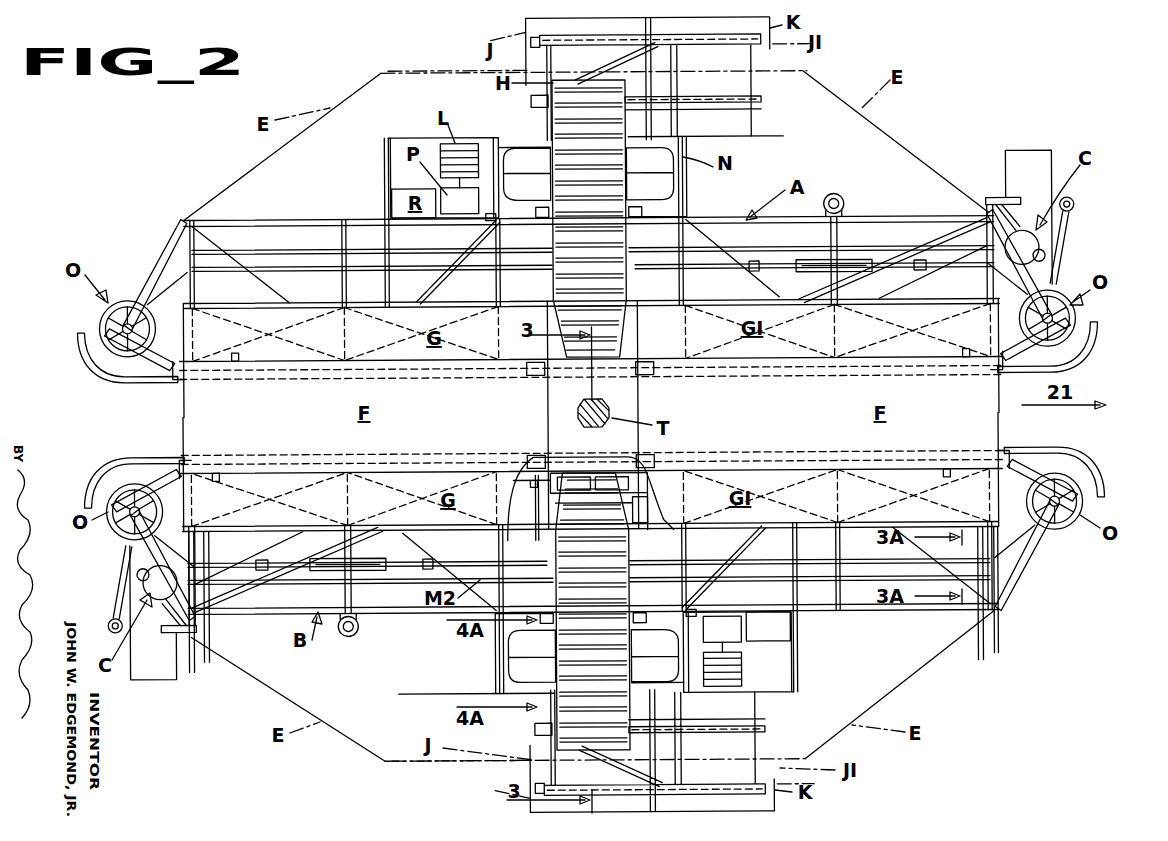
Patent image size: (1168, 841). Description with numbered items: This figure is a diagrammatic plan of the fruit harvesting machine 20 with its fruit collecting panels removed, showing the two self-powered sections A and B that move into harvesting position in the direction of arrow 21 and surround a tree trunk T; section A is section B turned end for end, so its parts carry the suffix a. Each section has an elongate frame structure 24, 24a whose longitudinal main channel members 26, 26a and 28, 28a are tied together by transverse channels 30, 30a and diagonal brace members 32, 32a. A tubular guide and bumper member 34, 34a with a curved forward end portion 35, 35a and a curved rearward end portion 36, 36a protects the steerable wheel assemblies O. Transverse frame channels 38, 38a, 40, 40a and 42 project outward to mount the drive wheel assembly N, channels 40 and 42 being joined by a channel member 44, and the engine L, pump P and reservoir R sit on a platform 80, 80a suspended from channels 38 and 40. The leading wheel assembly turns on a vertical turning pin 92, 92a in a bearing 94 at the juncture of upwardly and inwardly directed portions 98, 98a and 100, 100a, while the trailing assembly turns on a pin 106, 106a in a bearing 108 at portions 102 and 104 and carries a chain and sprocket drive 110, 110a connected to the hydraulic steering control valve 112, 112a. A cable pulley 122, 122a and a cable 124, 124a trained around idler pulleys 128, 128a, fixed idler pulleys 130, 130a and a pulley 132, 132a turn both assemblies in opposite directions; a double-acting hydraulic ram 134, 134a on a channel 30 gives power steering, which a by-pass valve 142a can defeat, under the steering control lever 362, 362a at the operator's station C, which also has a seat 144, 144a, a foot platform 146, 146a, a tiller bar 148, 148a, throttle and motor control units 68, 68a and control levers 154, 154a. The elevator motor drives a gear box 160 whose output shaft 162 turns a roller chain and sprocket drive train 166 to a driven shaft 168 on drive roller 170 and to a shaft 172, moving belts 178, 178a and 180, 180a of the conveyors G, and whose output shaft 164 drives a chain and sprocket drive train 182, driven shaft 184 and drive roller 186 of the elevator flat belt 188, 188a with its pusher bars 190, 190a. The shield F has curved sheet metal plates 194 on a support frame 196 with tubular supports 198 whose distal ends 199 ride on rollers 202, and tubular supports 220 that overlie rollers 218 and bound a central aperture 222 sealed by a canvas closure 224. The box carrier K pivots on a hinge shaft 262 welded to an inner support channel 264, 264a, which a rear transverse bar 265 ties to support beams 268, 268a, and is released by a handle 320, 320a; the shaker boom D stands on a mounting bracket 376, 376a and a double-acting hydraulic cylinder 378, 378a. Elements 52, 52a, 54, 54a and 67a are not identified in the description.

The fruit harvesting machine 20 is at (932, 100).
The arrow 21 is at (1072, 400).
The frame structure 24 is at (270, 630).
The frame structure 24a is at (250, 205).
The longitudinal main channel member 26 is at (540, 468).
The longitudinal main channel member 26a is at (195, 370).
The longitudinal main channel member 28 is at (392, 620).
The longitudinal main channel member 28a is at (873, 218).
The transverse channels 30 is at (345, 541).
The transverse channels 30a is at (340, 238).
The diagonal brace members 32 is at (272, 545).
The diagonal brace members 32a is at (310, 330).
The tubular guide and bumper member 34 is at (270, 452).
The tubular guide and bumper member 34a is at (180, 378).
The curved forward end portion 35 is at (1100, 471).
The curved forward end portion 35a is at (1098, 340).
The curved rearward end portion 36 is at (95, 462).
The curved rearward end portion 36a is at (80, 337).
The transverse frame channel 38 is at (800, 665).
The transverse frame channel 38a is at (385, 152).
The transverse frame channel 40 is at (686, 545).
The transverse frame channel 40a is at (497, 280).
The transverse frame channel 42 is at (490, 483).
The channel member 44 is at (505, 682).
The conveyor support 52 is at (695, 601).
The conveyor support 52a is at (553, 226).
The chute 54 is at (520, 660).
The chute 54a is at (515, 178).
The chute lip 67a is at (685, 206).
The throttle and motor control unit 68 is at (158, 630).
The throttle and motor control unit 68a is at (998, 196).
The platform 80 is at (785, 683).
The platform 80a is at (392, 140).
The vertical turning pin 92 is at (1080, 492).
The vertical turning pin 92a is at (112, 318).
The bearing 94 is at (1062, 530).
The upwardly and inwardly directed portion 98 is at (1040, 467).
The upwardly and inwardly directed portion 98a is at (172, 375).
The upwardly and inwardly directed portion 100 is at (1040, 560).
The upwardly and inwardly directed portion 100a is at (168, 234).
The upwardly and inwardly directed portion 102 is at (155, 462).
The upwardly and inwardly directed portion 104 is at (126, 535).
The vertical turning pin 106 is at (112, 505).
The vertical turning pin 106a is at (1085, 312).
The bearing 108 is at (100, 480).
The chain and sprocket drive 110 is at (205, 513).
The chain and sprocket drive 110a is at (995, 285).
The hydraulic steering control valve 112 is at (205, 618).
The hydraulic steering control valve 112a is at (960, 228).
The cable pulley 122 is at (1090, 505).
The cable pulley 122a is at (100, 348).
The cable 124 is at (790, 545).
The cable 124a is at (298, 255).
The idler pulleys 128 is at (1000, 580).
The idler pulleys 128a is at (193, 267).
The fixed idler pulleys 130 is at (210, 560).
The fixed idler pulleys 130a is at (993, 268).
The pulley 132 is at (120, 480).
The pulley 132a is at (1097, 325).
The double-acting hydraulic ram 134 is at (330, 566).
The double-acting hydraulic ram 134a is at (823, 268).
The by-pass valve 142a is at (684, 283).
The seat 144 is at (140, 571).
The seat 144a is at (1045, 248).
The foot platform 146 is at (160, 675).
The foot platform 146a is at (1043, 157).
The tiller bar 148 is at (130, 578).
The tiller bar 148a is at (1080, 217).
The control lever 154 is at (210, 588).
The control lever 154a is at (995, 210).
The gear box 160 is at (540, 560).
The output shaft 162 is at (480, 606).
The output shaft 164 is at (535, 543).
The roller chain and sprocket drive train 166 is at (568, 590).
The driven shaft 168 is at (655, 560).
The drive roller 170 is at (648, 508).
The shaft 172 is at (535, 515).
The belt 178 is at (922, 462).
The belt 178a is at (812, 385).
The belt 180 is at (398, 470).
The belt 180a is at (307, 387).
The chain and sprocket drive train 182 is at (530, 497).
The driven shaft 184 is at (545, 475).
The drive roller 186 is at (580, 470).
The flat belt 188 is at (567, 728).
The flat belt 188a is at (577, 82).
The transverse pusher bars 190 is at (603, 703).
The transverse pusher bars 190a is at (556, 280).
The curved sheet metal plates 194 is at (595, 408).
The support frame 196 is at (645, 352).
The tubular support 198 is at (210, 505).
The distal end 199 is at (222, 355).
The roller 202 is at (235, 353).
The rollers 218 is at (530, 380).
The tubular supports 220 is at (500, 350).
The central aperture 222 is at (642, 402).
The canvas closure 224 is at (555, 398).
The hinge shaft 262 is at (690, 750).
The inner support channel 264 is at (780, 708).
The inner support channel 264a is at (785, 112).
The rear transverse bar 265 is at (535, 768).
The support beams 268 is at (775, 737).
The support beams 268a is at (790, 60).
The handle 320 is at (483, 693).
The handle 320a is at (487, 140).
The control lever 362 is at (205, 635).
The control lever 362a is at (994, 188).
The mounting bracket 376 is at (348, 636).
The mounting bracket 376a is at (848, 206).
The double-acting hydraulic cylinder 378 is at (360, 636).
The double-acting hydraulic cylinder 378a is at (836, 195).